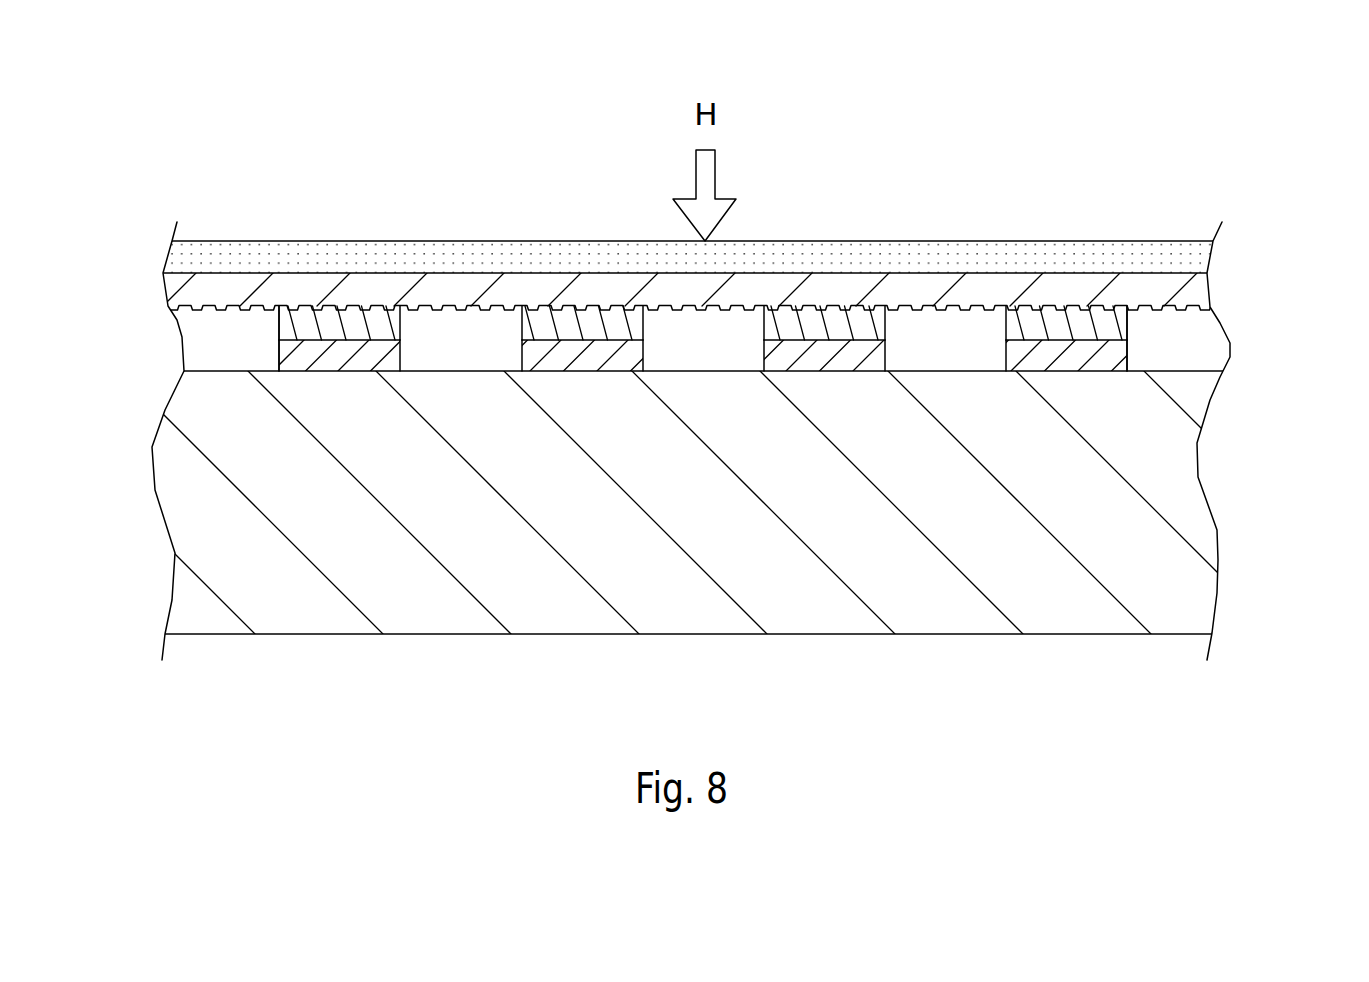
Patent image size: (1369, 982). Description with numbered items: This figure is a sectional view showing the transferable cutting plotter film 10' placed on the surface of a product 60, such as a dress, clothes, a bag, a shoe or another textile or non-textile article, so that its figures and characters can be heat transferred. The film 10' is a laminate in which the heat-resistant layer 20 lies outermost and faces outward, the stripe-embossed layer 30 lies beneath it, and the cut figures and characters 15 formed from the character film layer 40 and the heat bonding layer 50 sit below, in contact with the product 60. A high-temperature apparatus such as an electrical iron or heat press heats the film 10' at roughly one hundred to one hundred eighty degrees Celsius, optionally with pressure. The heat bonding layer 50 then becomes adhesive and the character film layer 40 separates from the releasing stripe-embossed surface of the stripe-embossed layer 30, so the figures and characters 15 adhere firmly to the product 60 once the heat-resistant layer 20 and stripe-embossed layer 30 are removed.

The cutting plotter film 10' is at (691, 356).
The figures and characters 15 is at (268, 337).
The heat-resistant layer 20 is at (1066, 241).
The stripe-embossed layer 30 is at (1143, 293).
The character film layer 40 is at (1105, 327).
The heat bonding layer 50 is at (1098, 370).
The product 60 is at (1065, 608).